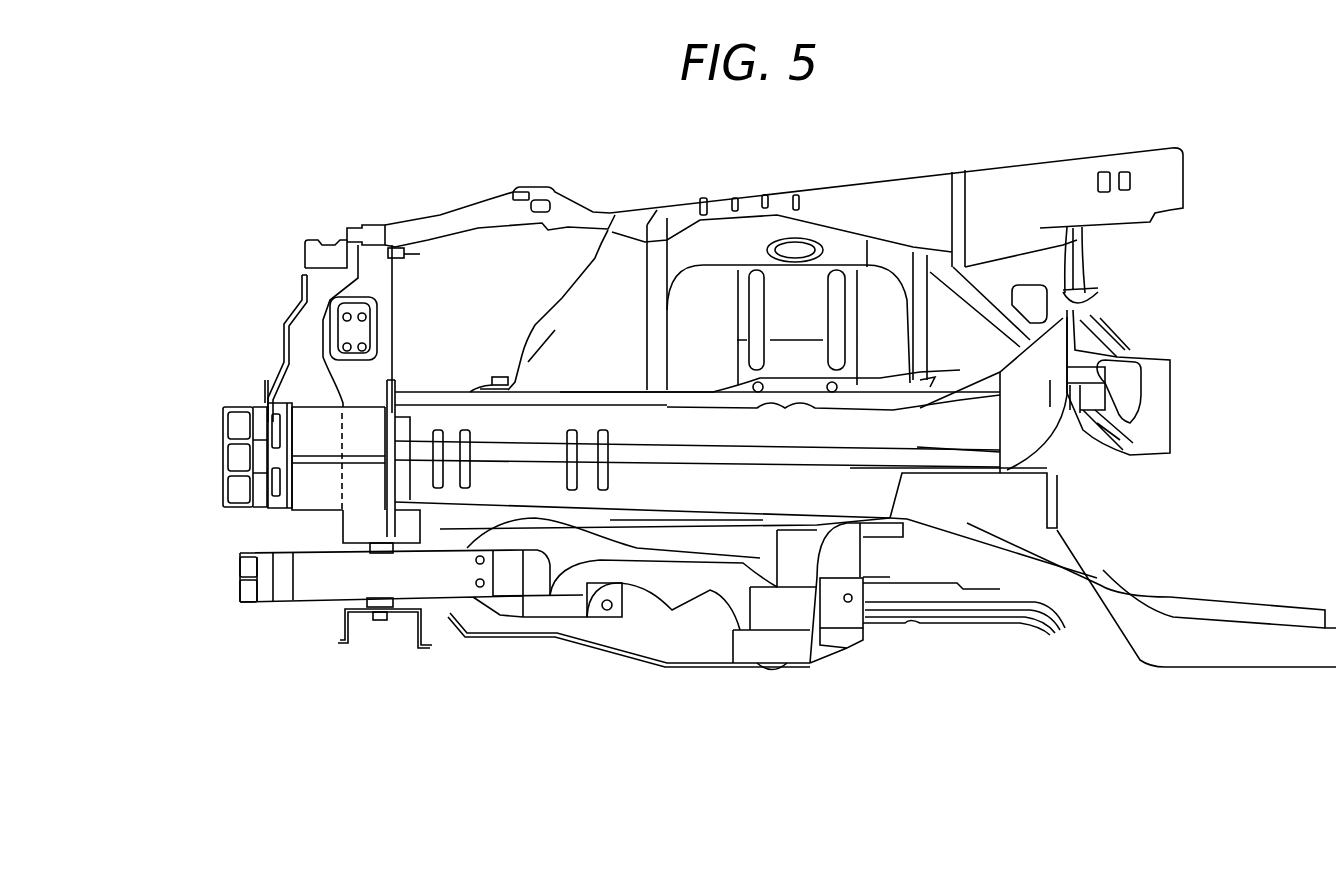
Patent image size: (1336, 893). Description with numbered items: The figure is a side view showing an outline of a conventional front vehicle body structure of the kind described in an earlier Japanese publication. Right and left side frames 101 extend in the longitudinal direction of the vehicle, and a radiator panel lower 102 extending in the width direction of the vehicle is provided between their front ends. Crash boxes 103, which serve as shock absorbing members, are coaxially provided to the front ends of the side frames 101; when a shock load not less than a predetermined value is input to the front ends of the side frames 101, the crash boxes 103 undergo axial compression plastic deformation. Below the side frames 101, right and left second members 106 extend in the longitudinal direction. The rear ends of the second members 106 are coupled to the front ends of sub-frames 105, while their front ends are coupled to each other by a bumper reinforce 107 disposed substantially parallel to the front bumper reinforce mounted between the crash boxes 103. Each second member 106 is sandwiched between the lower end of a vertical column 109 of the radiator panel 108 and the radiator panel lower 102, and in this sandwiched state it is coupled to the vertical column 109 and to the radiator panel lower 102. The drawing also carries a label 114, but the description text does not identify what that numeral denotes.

The side frame 101 is at (975, 493).
The radiator panel lower 102 is at (347, 660).
The crash box 103 is at (313, 433).
The sub-frame 105 is at (603, 612).
The second member 106 is at (303, 593).
The bumper reinforce 107 is at (243, 550).
The radiator panel 108 is at (320, 322).
The vertical column 109 is at (377, 370).
The connector 114 is at (237, 402).